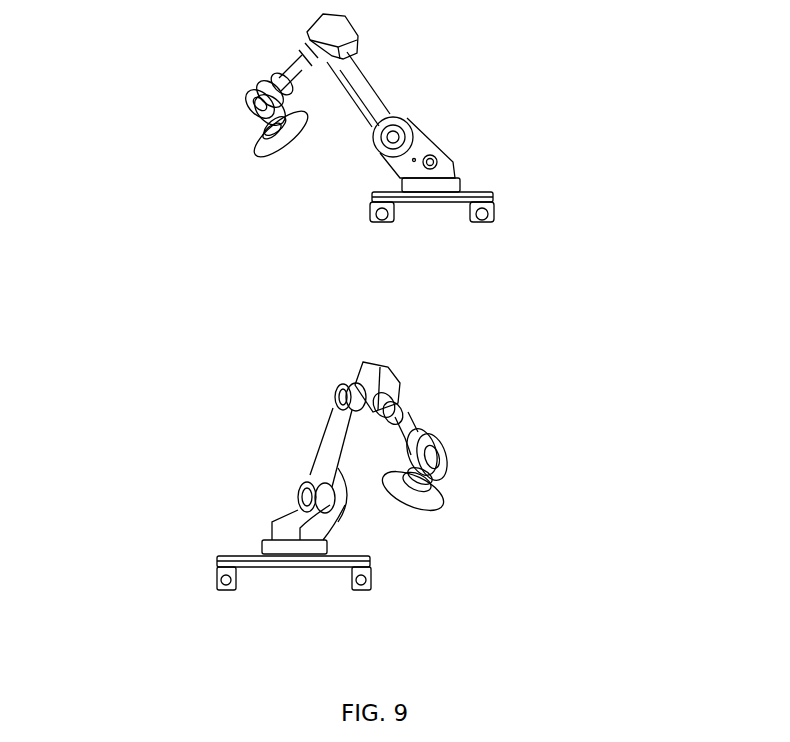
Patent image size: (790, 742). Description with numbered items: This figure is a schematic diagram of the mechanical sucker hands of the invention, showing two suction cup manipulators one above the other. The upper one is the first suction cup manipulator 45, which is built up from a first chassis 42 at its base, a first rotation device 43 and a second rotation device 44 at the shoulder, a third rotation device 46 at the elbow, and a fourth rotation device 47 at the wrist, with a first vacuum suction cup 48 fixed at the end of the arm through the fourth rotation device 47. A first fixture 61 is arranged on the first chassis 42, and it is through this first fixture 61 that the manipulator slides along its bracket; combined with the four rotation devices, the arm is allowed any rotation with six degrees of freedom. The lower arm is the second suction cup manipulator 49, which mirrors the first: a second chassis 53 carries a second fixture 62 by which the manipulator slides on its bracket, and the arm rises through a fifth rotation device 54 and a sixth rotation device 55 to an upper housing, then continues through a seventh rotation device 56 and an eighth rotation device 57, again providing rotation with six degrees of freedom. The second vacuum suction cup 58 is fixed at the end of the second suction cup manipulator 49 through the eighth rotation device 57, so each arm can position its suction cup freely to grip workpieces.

The first chassis 42 is at (433, 192).
The first rotation device 43 is at (440, 162).
The second rotation device 44 is at (412, 132).
The first suction cup manipulator 45 is at (363, 82).
The third rotation device 46 is at (302, 54).
The fourth rotation device 47 is at (250, 107).
The first vacuum suction cup 48 is at (262, 148).
The first fixture 61 is at (497, 210).
The second chassis 53 is at (293, 540).
The fifth rotation device 54 is at (298, 499).
The sixth rotation device 55 is at (338, 398).
The second suction cup manipulator 49 is at (385, 367).
The seventh rotation device 56 is at (400, 404).
The eighth rotation device 57 is at (447, 458).
The second vacuum suction cup 58 is at (447, 507).
The second fixture 62 is at (370, 580).